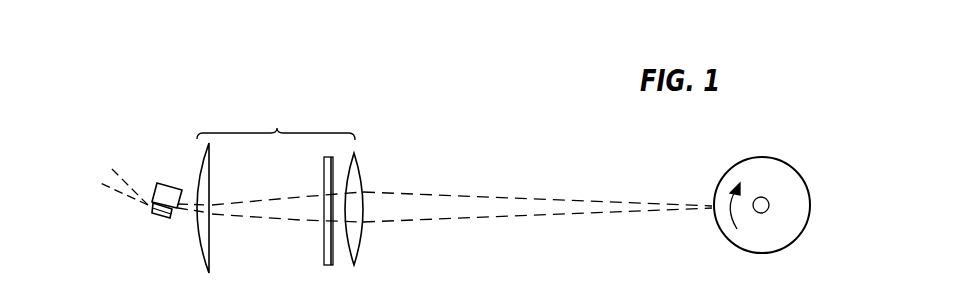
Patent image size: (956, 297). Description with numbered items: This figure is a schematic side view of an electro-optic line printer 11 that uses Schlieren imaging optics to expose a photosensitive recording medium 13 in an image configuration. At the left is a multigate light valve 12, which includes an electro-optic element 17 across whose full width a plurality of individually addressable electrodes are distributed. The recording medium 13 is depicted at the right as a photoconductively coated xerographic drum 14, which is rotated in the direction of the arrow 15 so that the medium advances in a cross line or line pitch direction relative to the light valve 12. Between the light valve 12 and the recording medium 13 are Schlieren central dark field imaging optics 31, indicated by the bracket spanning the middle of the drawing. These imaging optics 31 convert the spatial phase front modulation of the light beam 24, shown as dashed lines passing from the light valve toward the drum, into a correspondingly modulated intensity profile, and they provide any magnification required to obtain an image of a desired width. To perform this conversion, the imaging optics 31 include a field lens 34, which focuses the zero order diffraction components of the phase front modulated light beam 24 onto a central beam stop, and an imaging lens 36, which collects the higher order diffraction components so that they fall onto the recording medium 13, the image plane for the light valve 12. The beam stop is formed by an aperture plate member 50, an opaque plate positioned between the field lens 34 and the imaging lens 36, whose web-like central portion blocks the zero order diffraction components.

The electro-optic line printer 11 is at (492, 188).
The multigate light valve 12 is at (174, 168).
The photosensitive recording medium 13 is at (738, 168).
The photoconductively coated xerographic drum 14 is at (757, 238).
The arrow 15 is at (728, 215).
The electro-optic element 17 is at (156, 182).
The light beam 24 is at (297, 208).
The Schlieren central dark field imaging optics 31 is at (276, 121).
The field lens 34 is at (206, 271).
The imaging lens 36 is at (359, 243).
The aperture plate member 50 is at (323, 242).